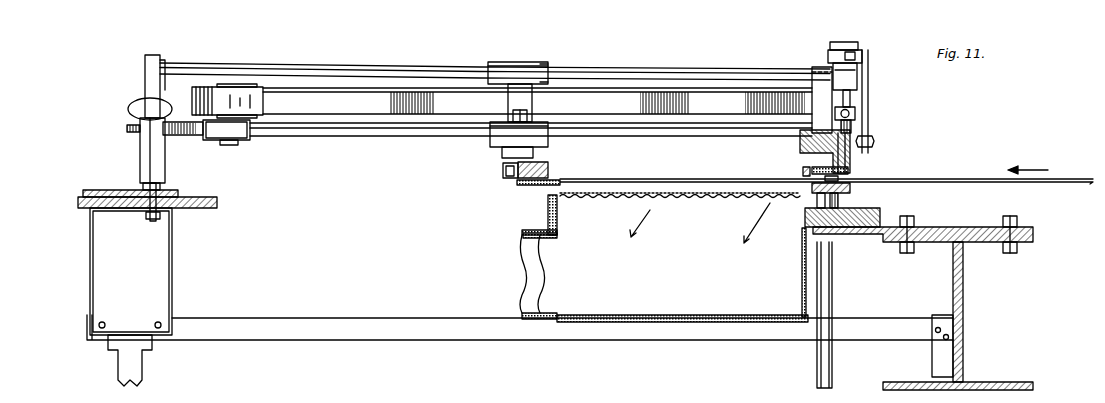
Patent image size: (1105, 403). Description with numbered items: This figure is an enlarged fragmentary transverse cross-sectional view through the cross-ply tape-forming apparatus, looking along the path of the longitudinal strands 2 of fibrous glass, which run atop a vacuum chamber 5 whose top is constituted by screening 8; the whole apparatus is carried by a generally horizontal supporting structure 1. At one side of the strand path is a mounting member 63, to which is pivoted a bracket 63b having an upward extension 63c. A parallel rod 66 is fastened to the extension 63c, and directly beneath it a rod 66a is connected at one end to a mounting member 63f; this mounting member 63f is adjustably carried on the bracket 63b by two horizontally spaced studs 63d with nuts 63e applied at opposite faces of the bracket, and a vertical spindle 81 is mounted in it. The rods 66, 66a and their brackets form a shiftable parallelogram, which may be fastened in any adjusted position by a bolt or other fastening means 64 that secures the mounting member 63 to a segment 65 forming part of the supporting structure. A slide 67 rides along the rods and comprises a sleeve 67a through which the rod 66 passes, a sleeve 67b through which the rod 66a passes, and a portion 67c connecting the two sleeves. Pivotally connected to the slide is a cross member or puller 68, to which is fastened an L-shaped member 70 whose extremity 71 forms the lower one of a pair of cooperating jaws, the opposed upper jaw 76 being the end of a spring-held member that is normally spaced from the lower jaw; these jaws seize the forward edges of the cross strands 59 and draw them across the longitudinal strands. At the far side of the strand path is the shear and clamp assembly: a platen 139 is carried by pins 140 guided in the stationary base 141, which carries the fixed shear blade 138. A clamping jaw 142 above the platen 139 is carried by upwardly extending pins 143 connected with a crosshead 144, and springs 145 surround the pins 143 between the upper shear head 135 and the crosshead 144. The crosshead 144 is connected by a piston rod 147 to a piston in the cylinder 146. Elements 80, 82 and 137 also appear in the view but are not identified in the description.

The supporting structure 1 is at (963, 265).
The longitudinal strands 2 is at (702, 192).
The vacuum chamber 5 is at (550, 275).
The screening 8 is at (608, 198).
The cross strands 59 is at (978, 180).
The mounting member 63 is at (100, 190).
The bracket 63b is at (150, 150).
The upward extension 63c is at (152, 84).
The studs 63d is at (192, 135).
The nuts 63e is at (150, 103).
The mounting member 63f is at (232, 134).
The bolt 64 is at (147, 217).
The segment 65 is at (78, 203).
The parallel rods 66 is at (418, 59).
The rod 66a is at (443, 133).
The slide 67 is at (518, 70).
The sleeve 67a is at (540, 72).
The sleeve 67b is at (505, 140).
The connecting portion 67c is at (508, 106).
The cross member 68 is at (546, 166).
The L-shaped member 70 is at (515, 178).
The lower jaw 71 is at (552, 196).
The upper jaw 76 is at (560, 181).
The scale bar 80 is at (333, 102).
The vertical spindle 81 is at (222, 86).
The pulley 82 is at (254, 87).
The upper shear head 135 is at (800, 147).
The key 137 is at (803, 171).
The fixed shear blade 138 is at (798, 203).
The platen 139 is at (840, 179).
The pins 140 is at (850, 188).
The stationary base 141 is at (882, 212).
The clamping jaw 142 is at (853, 171).
The pins 143 is at (875, 139).
The crosshead 144 is at (855, 112).
The springs 145 is at (851, 127).
The cylinder 146 is at (846, 42).
The piston rod 147 is at (850, 100).